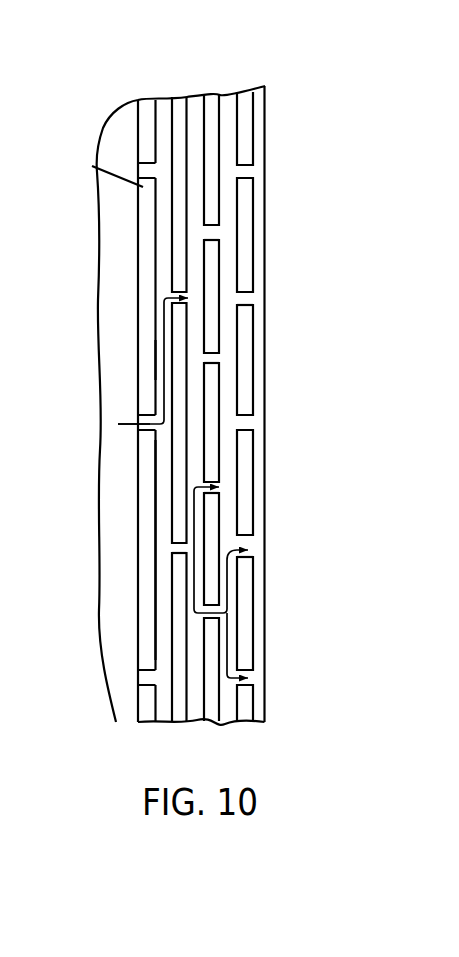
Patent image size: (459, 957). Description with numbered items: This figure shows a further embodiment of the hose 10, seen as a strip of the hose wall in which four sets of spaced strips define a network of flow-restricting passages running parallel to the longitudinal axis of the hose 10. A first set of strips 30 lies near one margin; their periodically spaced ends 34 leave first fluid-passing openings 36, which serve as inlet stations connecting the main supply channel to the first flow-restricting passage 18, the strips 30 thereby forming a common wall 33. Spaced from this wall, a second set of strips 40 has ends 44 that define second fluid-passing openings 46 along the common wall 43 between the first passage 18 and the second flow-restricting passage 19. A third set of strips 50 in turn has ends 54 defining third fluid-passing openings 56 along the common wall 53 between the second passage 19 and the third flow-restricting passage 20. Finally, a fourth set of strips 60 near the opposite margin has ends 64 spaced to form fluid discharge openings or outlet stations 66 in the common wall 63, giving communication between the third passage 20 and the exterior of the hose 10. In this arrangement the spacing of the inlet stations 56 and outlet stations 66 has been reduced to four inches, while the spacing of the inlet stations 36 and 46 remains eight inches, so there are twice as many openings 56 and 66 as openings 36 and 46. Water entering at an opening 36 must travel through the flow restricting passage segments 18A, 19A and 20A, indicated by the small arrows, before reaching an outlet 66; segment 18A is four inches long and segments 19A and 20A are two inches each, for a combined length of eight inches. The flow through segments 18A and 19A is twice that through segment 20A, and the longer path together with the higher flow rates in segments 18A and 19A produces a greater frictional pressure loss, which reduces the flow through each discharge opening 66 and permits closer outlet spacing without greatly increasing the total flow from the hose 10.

The hose 10 is at (296, 196).
The first set of strips 30 is at (146, 300).
The common wall 33 is at (148, 96).
The ends of the strips 34 is at (140, 162).
The common wall 43 is at (179, 95).
The ends of the strips 44 is at (178, 275).
The common wall 53 is at (213, 94).
The ends of the strips 54 is at (217, 372).
The common wall 63 is at (249, 90).
The ends of the strips 64 is at (247, 421).
The first flow-restricting passage 18 is at (157, 463).
The flow restricting passage segment 18A is at (150, 362).
The second flow-restricting passage 19 is at (200, 582).
The flow restricting passage segment 19A is at (222, 507).
The third flow-restricting passage 20 is at (240, 650).
The flow restricting passage segment 20A is at (232, 533).
The first fluid-passing openings 36 is at (140, 426).
The second set of strips 40 is at (175, 333).
The second fluid-passing openings 46 is at (172, 552).
The third set of strips 50 is at (213, 279).
The third fluid-passing openings 56 is at (225, 613).
The fourth set of strips 60 is at (245, 351).
The fluid discharge openings 66 is at (255, 693).